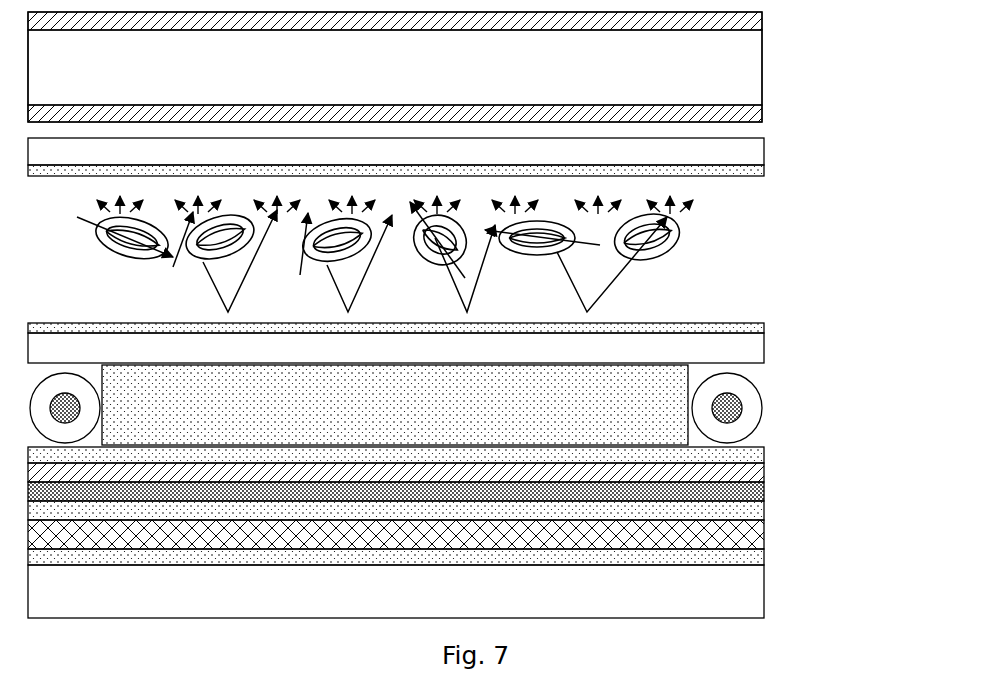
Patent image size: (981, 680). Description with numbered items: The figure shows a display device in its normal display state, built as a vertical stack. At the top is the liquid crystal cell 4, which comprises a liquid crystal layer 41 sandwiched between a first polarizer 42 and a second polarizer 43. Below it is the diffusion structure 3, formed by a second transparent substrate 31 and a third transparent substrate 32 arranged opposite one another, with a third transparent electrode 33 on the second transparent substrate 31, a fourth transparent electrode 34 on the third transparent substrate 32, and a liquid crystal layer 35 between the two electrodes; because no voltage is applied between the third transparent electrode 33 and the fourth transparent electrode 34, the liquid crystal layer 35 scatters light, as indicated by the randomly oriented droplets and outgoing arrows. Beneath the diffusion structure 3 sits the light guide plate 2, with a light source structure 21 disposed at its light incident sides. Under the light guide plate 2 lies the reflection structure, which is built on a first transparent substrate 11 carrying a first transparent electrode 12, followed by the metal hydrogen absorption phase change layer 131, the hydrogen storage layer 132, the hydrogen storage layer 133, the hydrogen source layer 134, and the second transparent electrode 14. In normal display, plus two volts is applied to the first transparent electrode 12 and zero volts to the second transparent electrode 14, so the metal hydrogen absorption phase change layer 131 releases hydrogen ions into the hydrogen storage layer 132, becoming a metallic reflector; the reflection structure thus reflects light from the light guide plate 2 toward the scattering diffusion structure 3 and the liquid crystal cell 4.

The liquid crystal cell 4 is at (475, 68).
The second polarizer 43 is at (725, 21).
The liquid crystal layer 41 is at (725, 65).
The first polarizer 42 is at (433, 114).
The diffusion structure 3 is at (468, 250).
The third transparent substrate 32 is at (725, 148).
The fourth transparent electrode 34 is at (725, 170).
The liquid crystal layer 35 is at (680, 235).
The third transparent electrode 33 is at (725, 328).
The second transparent substrate 31 is at (433, 348).
The light guide plate 2 is at (680, 370).
The light source structure 21 is at (762, 415).
The second transparent electrode 14 is at (725, 452).
The hydrogen source layer 134 is at (725, 473).
The hydrogen storage layer 133 is at (725, 491).
The hydrogen storage layer 132 is at (725, 508).
The metal hydrogen absorption phase change layer 131 is at (725, 532).
The first transparent electrode 12 is at (725, 553).
The first transparent substrate 11 is at (725, 604).